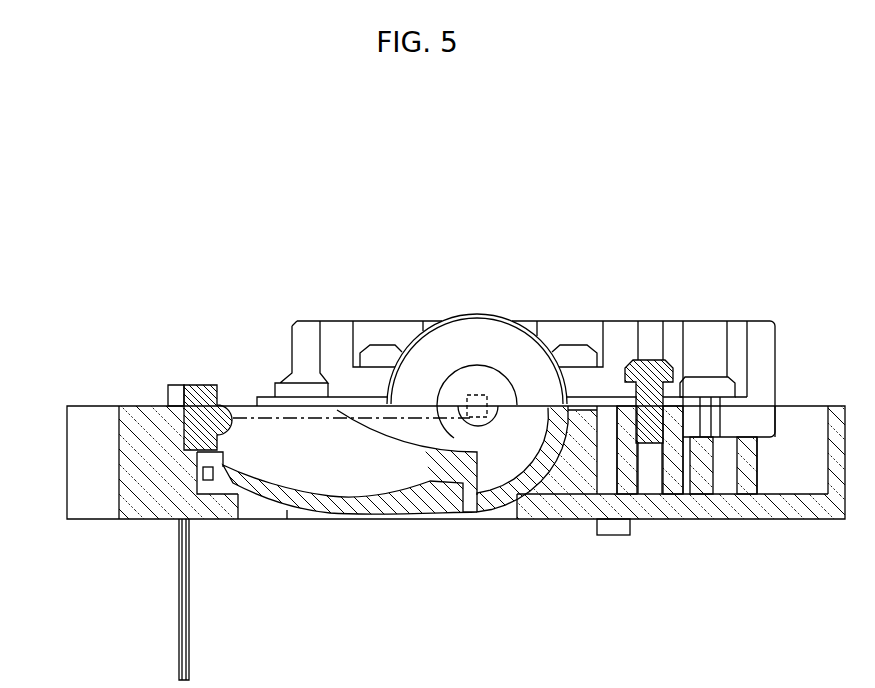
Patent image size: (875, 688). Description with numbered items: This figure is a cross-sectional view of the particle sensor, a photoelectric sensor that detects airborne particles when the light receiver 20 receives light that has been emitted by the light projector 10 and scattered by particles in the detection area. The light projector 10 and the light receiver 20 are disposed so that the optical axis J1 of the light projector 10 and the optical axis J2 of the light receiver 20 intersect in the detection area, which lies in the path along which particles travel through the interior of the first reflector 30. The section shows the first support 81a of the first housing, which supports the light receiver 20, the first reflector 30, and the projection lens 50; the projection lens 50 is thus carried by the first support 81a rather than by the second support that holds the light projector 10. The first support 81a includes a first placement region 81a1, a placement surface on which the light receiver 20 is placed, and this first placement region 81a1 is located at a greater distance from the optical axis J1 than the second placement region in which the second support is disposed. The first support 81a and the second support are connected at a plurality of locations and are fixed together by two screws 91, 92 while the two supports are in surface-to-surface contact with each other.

The light projector 10 is at (482, 397).
The light receiver 20 is at (205, 383).
The first reflector 30 is at (338, 493).
The projection lens 50 is at (472, 330).
The first support 81a is at (552, 505).
The first placement region 81a1 is at (183, 438).
The screw 91 is at (303, 373).
The screw 92 is at (702, 377).
The optical axis of light projector J1 is at (479, 407).
The optical axis of light receiver J2 is at (287, 422).